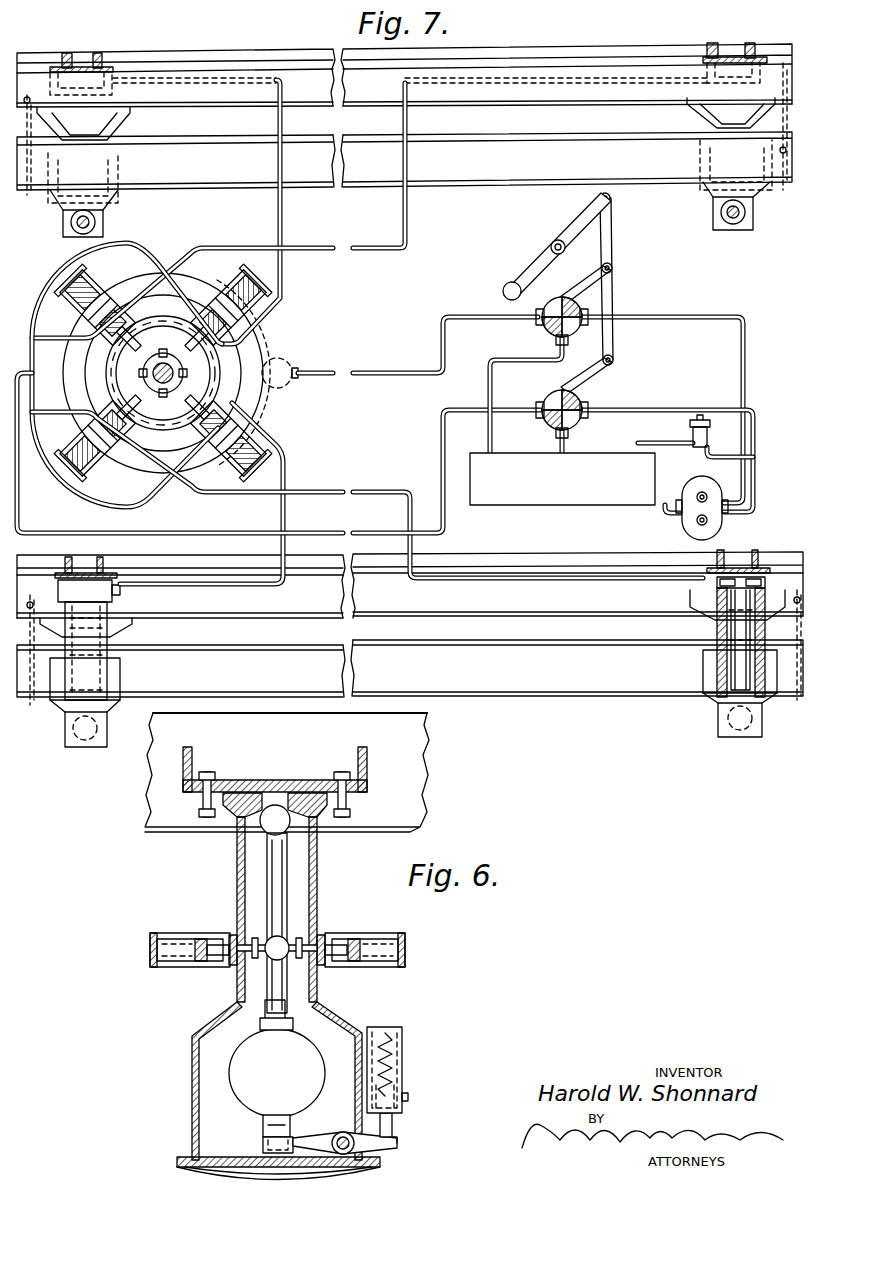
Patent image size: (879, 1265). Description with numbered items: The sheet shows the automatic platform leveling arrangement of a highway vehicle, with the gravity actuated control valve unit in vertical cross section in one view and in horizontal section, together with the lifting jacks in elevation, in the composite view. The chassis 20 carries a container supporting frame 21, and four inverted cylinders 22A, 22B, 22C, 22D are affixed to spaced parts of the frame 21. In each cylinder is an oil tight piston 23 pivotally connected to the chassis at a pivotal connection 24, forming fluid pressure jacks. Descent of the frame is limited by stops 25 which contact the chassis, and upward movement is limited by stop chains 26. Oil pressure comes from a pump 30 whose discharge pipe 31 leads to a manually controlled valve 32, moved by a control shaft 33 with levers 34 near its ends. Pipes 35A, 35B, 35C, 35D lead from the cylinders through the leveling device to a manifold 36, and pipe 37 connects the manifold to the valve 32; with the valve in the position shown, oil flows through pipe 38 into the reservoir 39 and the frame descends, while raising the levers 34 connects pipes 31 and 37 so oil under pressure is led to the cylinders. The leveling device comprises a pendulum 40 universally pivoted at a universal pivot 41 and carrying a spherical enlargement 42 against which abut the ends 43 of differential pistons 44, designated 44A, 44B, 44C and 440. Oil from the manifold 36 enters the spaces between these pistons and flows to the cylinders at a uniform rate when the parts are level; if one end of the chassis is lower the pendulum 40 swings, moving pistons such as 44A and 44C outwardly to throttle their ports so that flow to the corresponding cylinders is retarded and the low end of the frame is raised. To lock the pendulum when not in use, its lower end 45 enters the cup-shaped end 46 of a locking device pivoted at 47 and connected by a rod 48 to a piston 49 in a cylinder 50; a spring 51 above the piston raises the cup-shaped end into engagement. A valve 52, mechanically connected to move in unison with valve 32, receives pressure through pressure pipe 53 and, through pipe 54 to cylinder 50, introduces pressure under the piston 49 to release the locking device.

In FIG. 7, the chassis 20 is at (505, 190).
In FIG. 6, the chassis 20 is at (163, 832).
In FIG. 7, the container supporting frame 21 is at (510, 94).
In FIG. 7, the inverted cylinder 22A is at (98, 645).
In FIG. 7, the inverted cylinder 22B is at (715, 625).
In FIG. 7, the inverted cylinder 22C is at (118, 113).
In FIG. 7, the inverted cylinder 22D is at (708, 108).
In FIG. 7, the piston 23 is at (108, 205).
In FIG. 7, the pivotal connection 24 is at (75, 230).
In FIG. 7, the stop 25 is at (118, 126).
In FIG. 7, the stop chain 26 is at (30, 200).
In FIG. 7, the pump 30 is at (722, 520).
In FIG. 7, the discharge pipe 31 is at (645, 410).
In FIG. 7, the manually controlled valve 32 is at (548, 428).
In FIG. 7, the control shaft 33 is at (550, 243).
In FIG. 7, the lever 34 is at (530, 267).
In FIG. 7, the pipe 35A is at (215, 595).
In FIG. 7, the pipe 35B is at (488, 592).
In FIG. 7, the pipe 35C is at (228, 92).
In FIG. 7, the pipe 35D is at (596, 90).
In FIG. 7, the manifold 36 is at (42, 302).
In FIG. 7, the pipe 37 is at (210, 536).
In FIG. 7, the pipe 38 is at (598, 447).
In FIG. 7, the reservoir 39 is at (535, 500).
In FIG. 7, the pendulum 40 is at (262, 348).
In FIG. 6, the pendulum 40 is at (230, 1076).
In FIG. 6, the universal pivot 41 is at (262, 832).
In FIG. 7, the spherical enlargement 42 is at (140, 375).
In FIG. 6, the spherical enlargement 42 is at (280, 938).
In FIG. 7, the piston end 43 is at (163, 330).
In FIG. 6, the piston end 43 is at (240, 938).
In FIG. 6, the differential piston 44 is at (210, 968).
In FIG. 7, the differential piston 44A is at (262, 400).
In FIG. 7, the differential piston 44B is at (120, 448).
In FIG. 7, the differential piston 44C is at (228, 295).
In FIG. 7, the cylinder 440 is at (130, 305).
In FIG. 6, the lower end of pendulum 45 is at (262, 1124).
In FIG. 6, the cup-shaped end 46 is at (262, 1146).
In FIG. 6, the pivot 47 is at (340, 1134).
In FIG. 6, the rod 48 is at (393, 1130).
In FIG. 6, the piston 49 is at (403, 1092).
In FIG. 7, the cylinder 50 is at (290, 364).
In FIG. 6, the cylinder 50 is at (403, 1044).
In FIG. 6, the spring 51 is at (395, 1060).
In FIG. 7, the valve 52 is at (545, 333).
In FIG. 7, the pressure pipe 53 is at (668, 315).
In FIG. 7, the pipe 54 is at (392, 370).